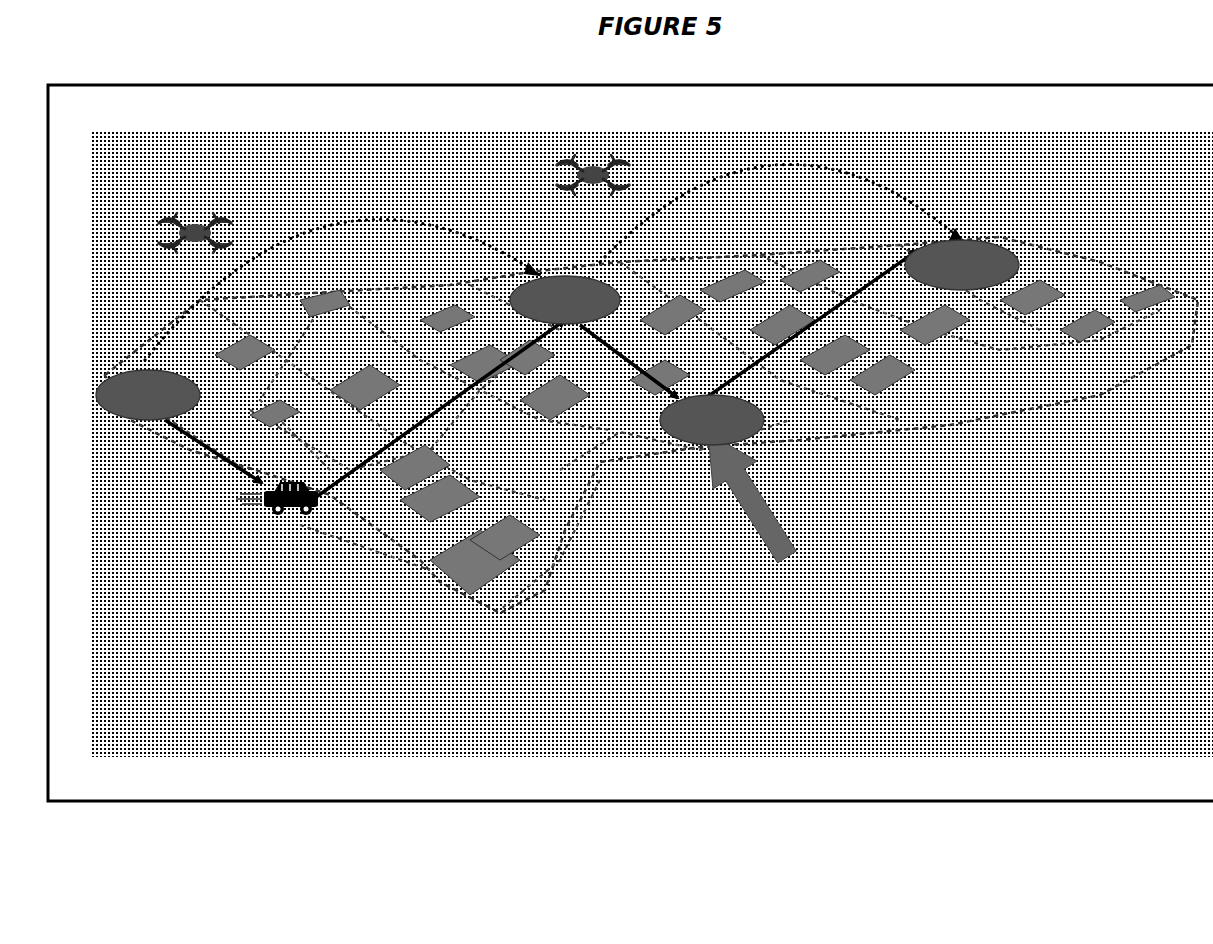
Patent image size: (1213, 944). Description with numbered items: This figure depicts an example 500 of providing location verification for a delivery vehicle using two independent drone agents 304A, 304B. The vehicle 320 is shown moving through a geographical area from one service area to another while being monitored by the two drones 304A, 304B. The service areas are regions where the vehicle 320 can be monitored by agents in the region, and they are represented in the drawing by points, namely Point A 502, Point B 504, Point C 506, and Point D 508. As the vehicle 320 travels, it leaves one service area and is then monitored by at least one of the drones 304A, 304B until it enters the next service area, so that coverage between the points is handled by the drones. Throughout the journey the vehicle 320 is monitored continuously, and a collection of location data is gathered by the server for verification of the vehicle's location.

The example 500 is at (108, 120).
The drone agent 304A is at (190, 204).
The drone agent 304B is at (590, 226).
The vehicle 320 is at (300, 542).
The Point A 502 is at (148, 482).
The Point B 504 is at (615, 262).
The Point C 506 is at (798, 484).
The Point D 508 is at (1097, 234).